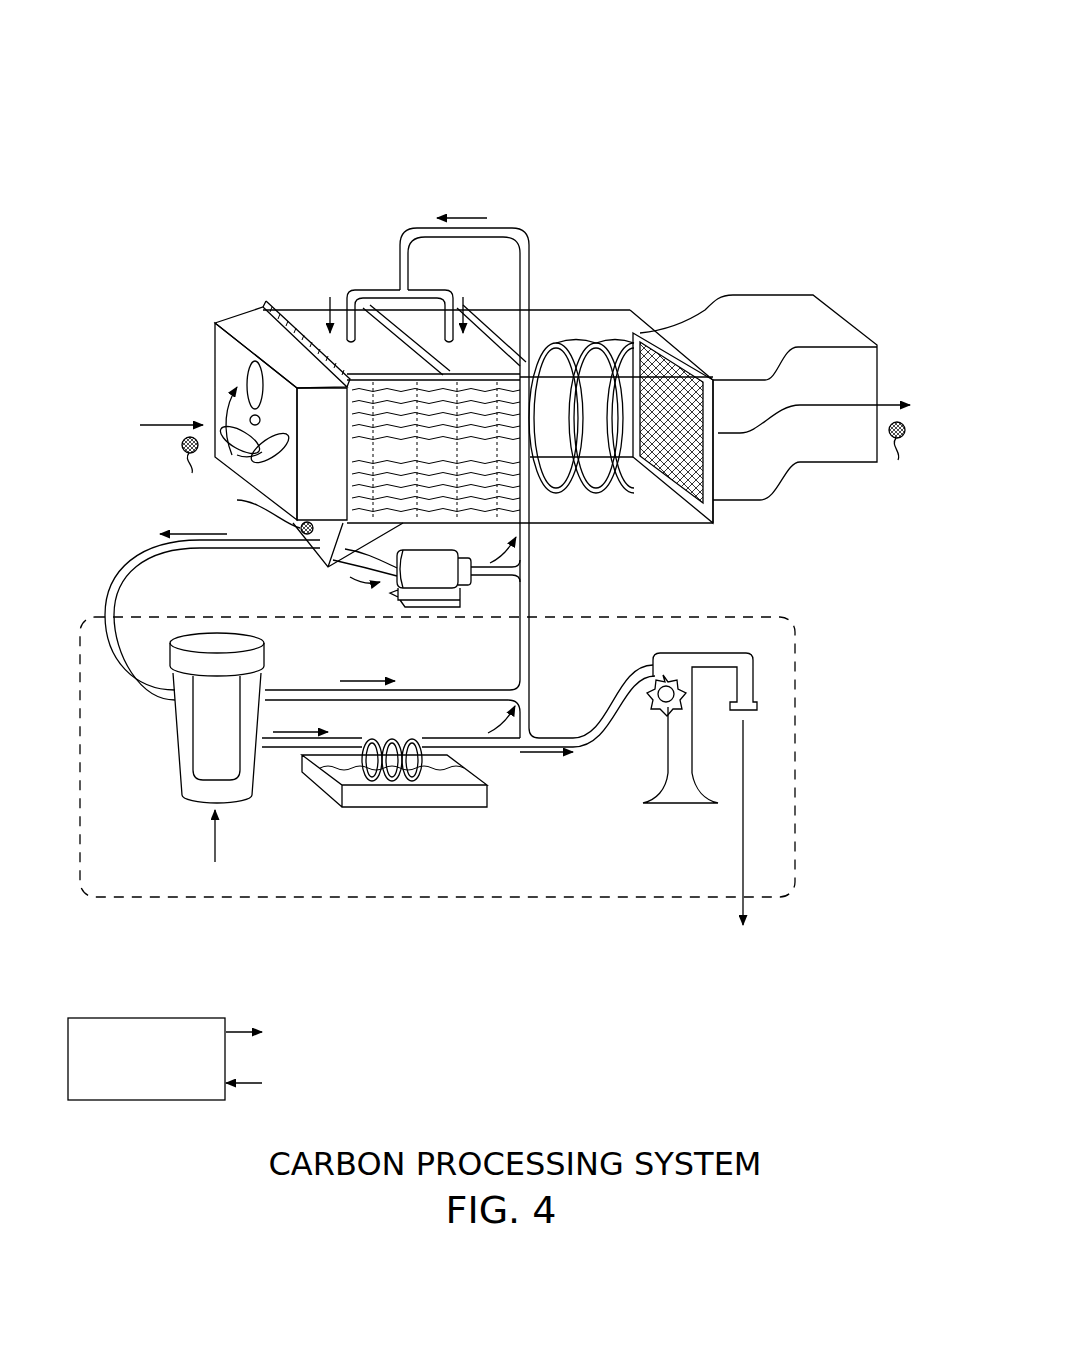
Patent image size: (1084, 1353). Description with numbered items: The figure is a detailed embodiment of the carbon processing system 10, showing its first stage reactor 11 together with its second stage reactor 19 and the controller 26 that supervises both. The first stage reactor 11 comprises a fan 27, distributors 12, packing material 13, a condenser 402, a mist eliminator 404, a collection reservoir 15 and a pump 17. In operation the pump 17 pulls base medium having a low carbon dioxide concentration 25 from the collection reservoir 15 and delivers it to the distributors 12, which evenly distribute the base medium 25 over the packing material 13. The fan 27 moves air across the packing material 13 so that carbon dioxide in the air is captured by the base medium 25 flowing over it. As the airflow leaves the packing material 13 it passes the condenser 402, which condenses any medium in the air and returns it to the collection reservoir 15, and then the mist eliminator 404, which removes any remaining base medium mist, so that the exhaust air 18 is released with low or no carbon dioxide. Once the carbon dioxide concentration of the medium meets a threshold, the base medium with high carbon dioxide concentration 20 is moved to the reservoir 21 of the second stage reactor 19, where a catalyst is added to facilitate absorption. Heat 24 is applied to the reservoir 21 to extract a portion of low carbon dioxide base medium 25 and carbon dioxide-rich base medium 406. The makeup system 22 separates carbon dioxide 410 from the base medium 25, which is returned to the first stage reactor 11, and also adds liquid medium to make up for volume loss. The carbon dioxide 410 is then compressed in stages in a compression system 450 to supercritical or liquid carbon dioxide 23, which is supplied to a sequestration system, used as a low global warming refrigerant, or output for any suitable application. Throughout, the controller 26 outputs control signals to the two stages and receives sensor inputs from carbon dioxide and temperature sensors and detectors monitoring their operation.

The carbon processing system 10 is at (283, 142).
The first stage reactor 11 is at (668, 186).
The distributors 12 is at (361, 363).
The packing material 13 is at (417, 457).
The collection reservoir 15 is at (325, 566).
The pump 17 is at (418, 583).
The exhaust air 18 is at (907, 372).
The second stage reactor 19 is at (772, 618).
The base medium with high carbon dioxide concentration 20 is at (122, 580).
The reservoir 21 is at (178, 740).
The makeup system 22 is at (405, 800).
The supercritical carbon dioxide or liquid carbon dioxide 23 is at (745, 889).
The heat 24 is at (215, 883).
The base medium having a low carbon dioxide concentration 25 is at (535, 533).
The controller 26 is at (135, 1083).
The fan 27 is at (215, 365).
The condenser 402 is at (585, 337).
The mist eliminator 404 is at (730, 327).
The carbon dioxide-rich base medium 406 is at (274, 749).
The carbon dioxide 410 is at (603, 745).
The compression system 450 is at (772, 680).